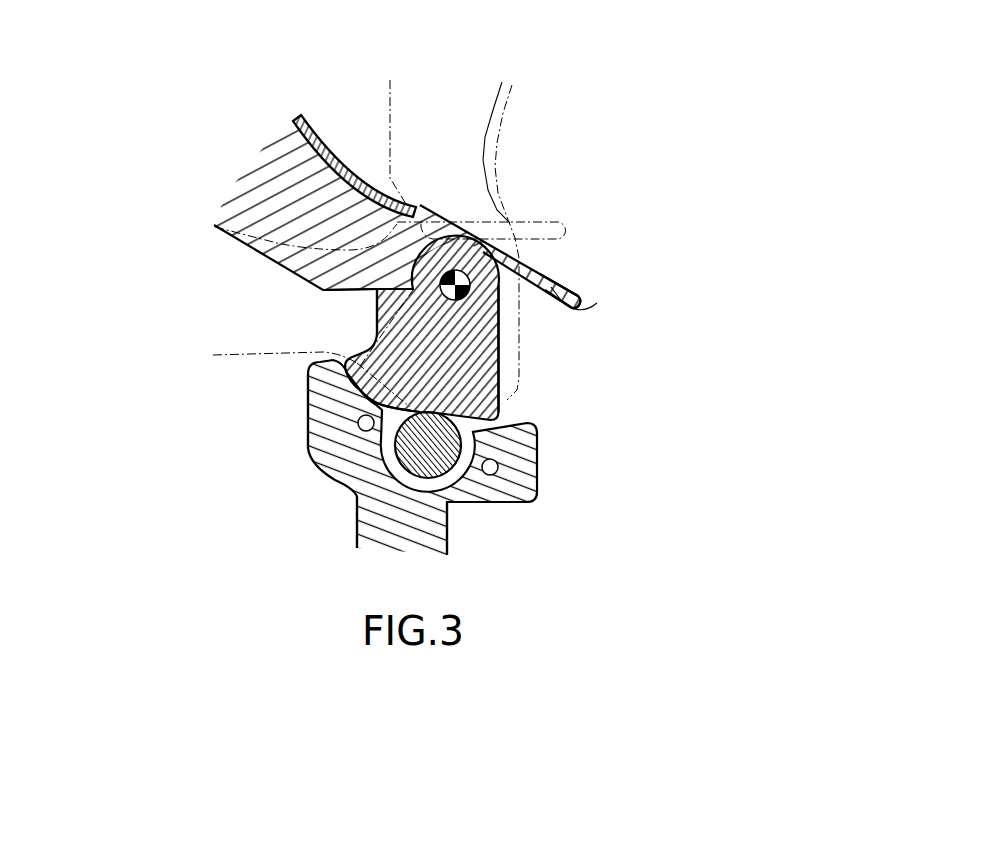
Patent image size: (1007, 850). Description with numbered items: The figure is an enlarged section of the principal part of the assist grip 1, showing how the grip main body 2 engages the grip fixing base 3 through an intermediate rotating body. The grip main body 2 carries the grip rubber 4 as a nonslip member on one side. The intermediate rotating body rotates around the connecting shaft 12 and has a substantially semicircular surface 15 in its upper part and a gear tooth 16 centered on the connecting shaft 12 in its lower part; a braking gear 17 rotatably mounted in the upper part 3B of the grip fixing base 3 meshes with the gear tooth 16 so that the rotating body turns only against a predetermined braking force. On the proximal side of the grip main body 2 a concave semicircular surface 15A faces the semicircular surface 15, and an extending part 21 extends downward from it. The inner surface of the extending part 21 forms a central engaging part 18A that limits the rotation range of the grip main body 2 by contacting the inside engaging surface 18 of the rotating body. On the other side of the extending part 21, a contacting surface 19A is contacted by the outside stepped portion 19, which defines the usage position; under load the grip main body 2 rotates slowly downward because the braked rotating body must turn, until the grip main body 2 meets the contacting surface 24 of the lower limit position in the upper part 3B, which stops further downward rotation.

The assist grip 1 is at (212, 383).
The grip main body 2 is at (218, 203).
The grip fixing base 3 is at (450, 538).
The upper part of the grip fixing base 3B is at (537, 448).
The grip rubber 4 is at (320, 154).
The connecting shaft 12 is at (500, 307).
The semicircular surface 15 is at (460, 272).
The concave semicircular surface 15A is at (447, 229).
The gear tooth 16 is at (366, 378).
The braking gear 17 is at (402, 468).
The inside engaging surface 18 is at (500, 343).
The central engaging part 18A is at (597, 303).
The outside stepped portion 19 is at (377, 300).
The contacting surface 19A is at (346, 296).
The extending part 21 is at (569, 279).
The contacting surface of the lower limit position 24 is at (330, 352).